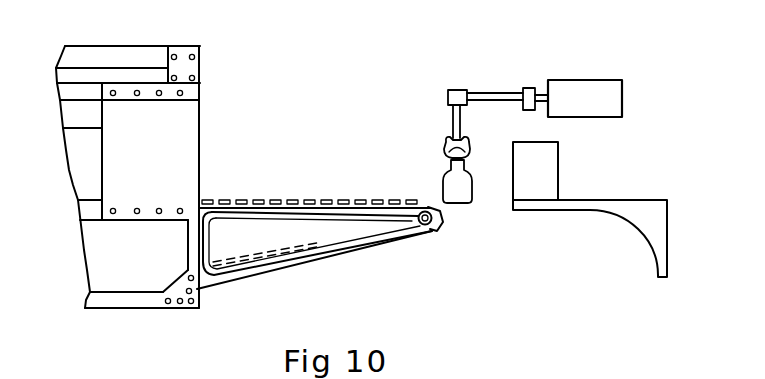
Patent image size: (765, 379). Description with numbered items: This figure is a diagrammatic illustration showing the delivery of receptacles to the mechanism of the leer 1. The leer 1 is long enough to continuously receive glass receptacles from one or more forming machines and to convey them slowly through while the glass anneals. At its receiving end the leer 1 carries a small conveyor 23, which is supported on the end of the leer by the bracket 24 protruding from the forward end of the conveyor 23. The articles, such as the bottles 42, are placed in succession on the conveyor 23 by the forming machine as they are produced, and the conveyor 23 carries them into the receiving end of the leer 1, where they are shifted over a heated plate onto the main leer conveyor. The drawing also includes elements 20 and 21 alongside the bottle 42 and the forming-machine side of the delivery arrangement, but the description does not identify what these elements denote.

The leer 1 is at (182, 157).
The support block and base plate 20 is at (545, 180).
The actuator rod assembly 21 is at (480, 93).
The conveyor 23 is at (352, 206).
The bracket 24 is at (373, 237).
The bottles 42 is at (462, 192).